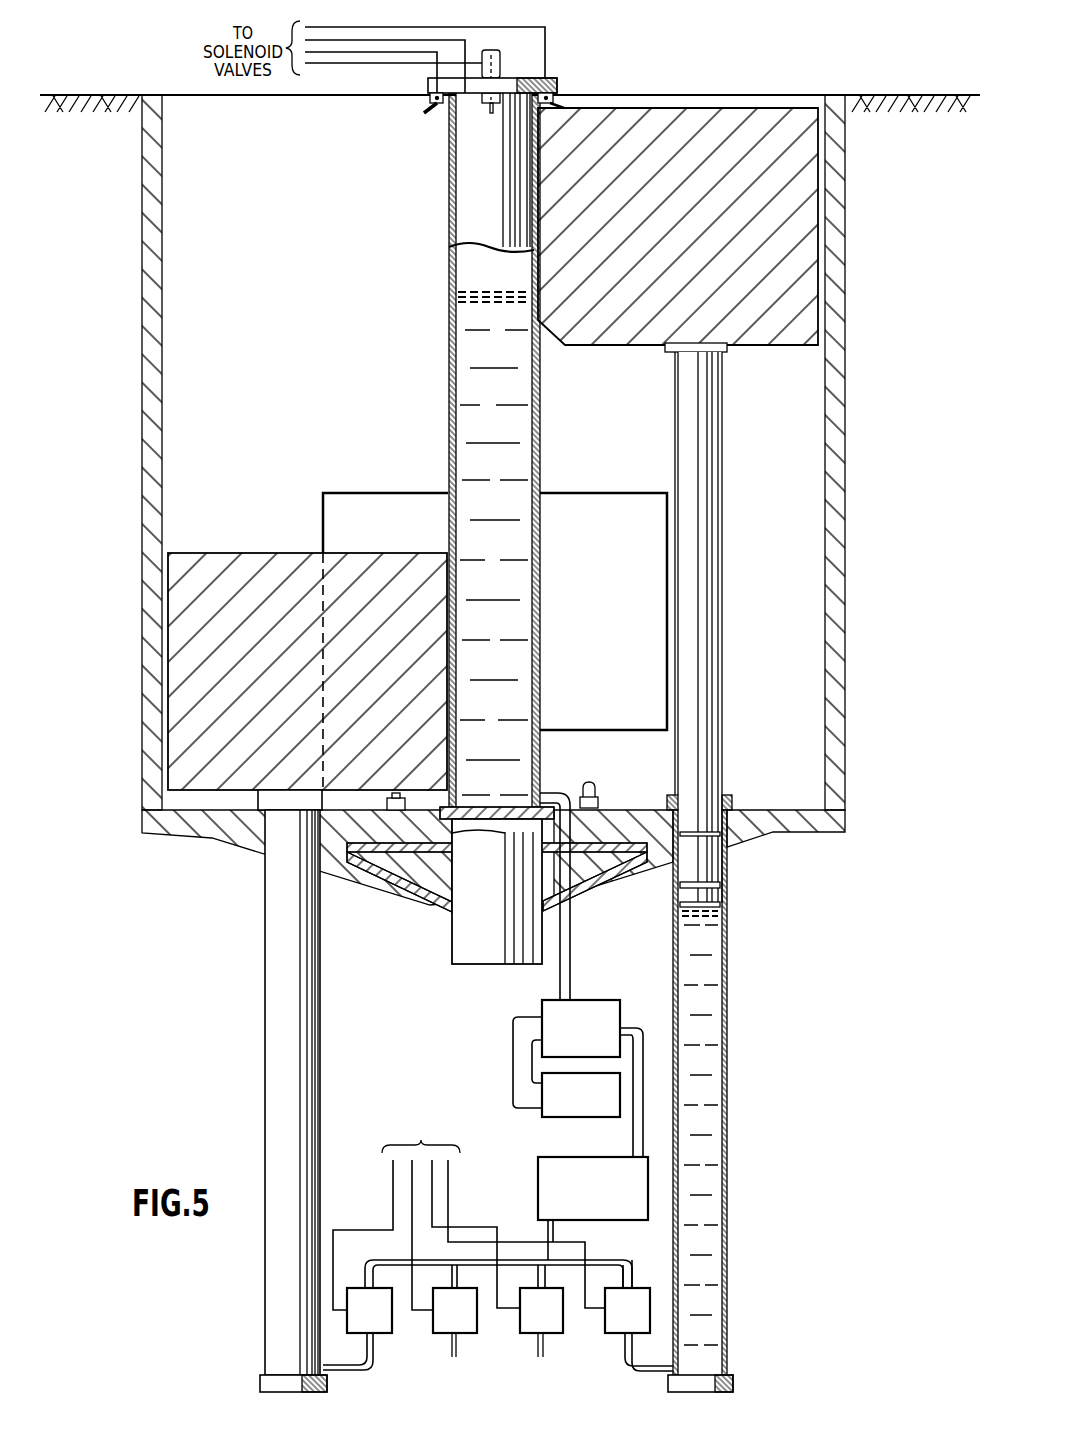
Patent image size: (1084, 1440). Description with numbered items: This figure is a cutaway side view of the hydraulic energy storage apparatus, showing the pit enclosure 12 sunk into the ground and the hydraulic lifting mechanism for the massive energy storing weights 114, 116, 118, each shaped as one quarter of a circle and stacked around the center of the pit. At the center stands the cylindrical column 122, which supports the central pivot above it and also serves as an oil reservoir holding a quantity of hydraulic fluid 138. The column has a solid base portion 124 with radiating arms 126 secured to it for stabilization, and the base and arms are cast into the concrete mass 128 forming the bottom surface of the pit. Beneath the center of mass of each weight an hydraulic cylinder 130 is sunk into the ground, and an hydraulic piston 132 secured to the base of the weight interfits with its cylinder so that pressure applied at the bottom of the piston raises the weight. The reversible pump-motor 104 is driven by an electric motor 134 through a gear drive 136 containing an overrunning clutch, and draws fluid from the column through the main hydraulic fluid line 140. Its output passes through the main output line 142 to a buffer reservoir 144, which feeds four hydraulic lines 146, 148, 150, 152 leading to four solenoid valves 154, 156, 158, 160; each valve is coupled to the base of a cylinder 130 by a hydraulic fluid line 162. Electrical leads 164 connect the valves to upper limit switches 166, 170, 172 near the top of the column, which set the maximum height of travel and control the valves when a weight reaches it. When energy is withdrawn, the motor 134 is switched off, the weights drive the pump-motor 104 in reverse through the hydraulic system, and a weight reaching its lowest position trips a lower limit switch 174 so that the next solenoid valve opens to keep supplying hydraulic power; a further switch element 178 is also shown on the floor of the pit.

The casing 12 is at (142, 270).
The reversible pump-motor 104 is at (567, 1038).
The weight 114 is at (669, 229).
The weight 116 is at (571, 623).
The weight 118 is at (269, 686).
The cylindrical column 122 is at (448, 268).
The solid base portion 124 is at (455, 965).
The radiating arms 126 is at (494, 872).
The concrete mass 128 is at (783, 822).
The hydraulic cylinder 130 is at (264, 1001).
The hydraulic piston 132 is at (722, 663).
The electric motor 134 is at (567, 1109).
The gear drive 136 is at (513, 1029).
The hydraulic fluid 138 is at (461, 336).
The main hydraulic fluid line 140 is at (571, 962).
The main output line 142 is at (633, 1129).
The buffer reservoir 144 is at (579, 1204).
The hydraulic line 146 is at (364, 1271).
The hydraulic line 148 is at (447, 1279).
The hydraulic line 150 is at (528, 1278).
The hydraulic line 152 is at (634, 1270).
The solenoid valve 154 is at (355, 1326).
The solenoid valve 156 is at (441, 1326).
The solenoid valve 158 is at (527, 1326).
The solenoid valve 160 is at (613, 1326).
The hydraulic fluid line 162 is at (373, 1360).
The electrical leads 164 is at (393, 1172).
The limit switch 166 is at (558, 100).
The limit switch 170 is at (483, 104).
The limit switch 172 is at (426, 99).
The lower limit switch 174 is at (598, 793).
The switch 178 is at (388, 798).